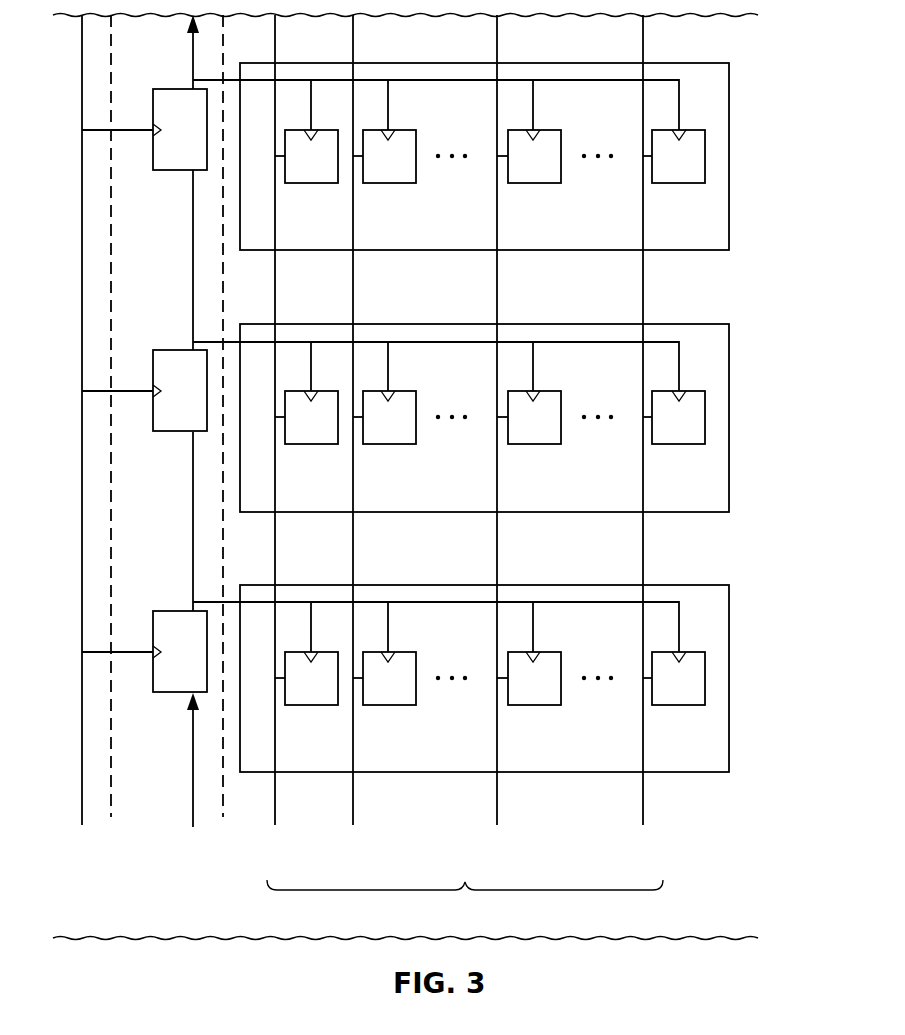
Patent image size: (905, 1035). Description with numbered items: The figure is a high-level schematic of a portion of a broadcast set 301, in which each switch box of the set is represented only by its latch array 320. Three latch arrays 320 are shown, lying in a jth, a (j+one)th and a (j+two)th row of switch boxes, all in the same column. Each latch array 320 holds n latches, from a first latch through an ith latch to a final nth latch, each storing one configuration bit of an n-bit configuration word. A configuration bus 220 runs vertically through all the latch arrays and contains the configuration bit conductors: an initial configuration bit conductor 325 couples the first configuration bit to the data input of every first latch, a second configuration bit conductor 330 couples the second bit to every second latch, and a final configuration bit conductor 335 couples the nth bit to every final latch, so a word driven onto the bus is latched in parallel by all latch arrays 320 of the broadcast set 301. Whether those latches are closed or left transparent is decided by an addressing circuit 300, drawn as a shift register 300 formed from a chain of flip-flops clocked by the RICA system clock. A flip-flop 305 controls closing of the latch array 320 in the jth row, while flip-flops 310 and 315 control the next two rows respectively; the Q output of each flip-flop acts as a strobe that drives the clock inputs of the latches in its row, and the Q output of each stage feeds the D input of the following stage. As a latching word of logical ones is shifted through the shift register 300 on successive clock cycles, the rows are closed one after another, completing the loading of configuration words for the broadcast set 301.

The configuration bus 220 is at (478, 471).
The addressing circuit 300 is at (111, 590).
The broadcast set 301 is at (778, 50).
The flip-flop 305 is at (165, 611).
The flip-flop 310 is at (165, 350).
The flip-flop 315 is at (165, 89).
The latch array 320 is at (729, 87).
The initial configuration bit conductor 325 is at (276, 792).
The second configuration bit conductor 330 is at (354, 792).
The final configuration bit conductor 335 is at (644, 792).